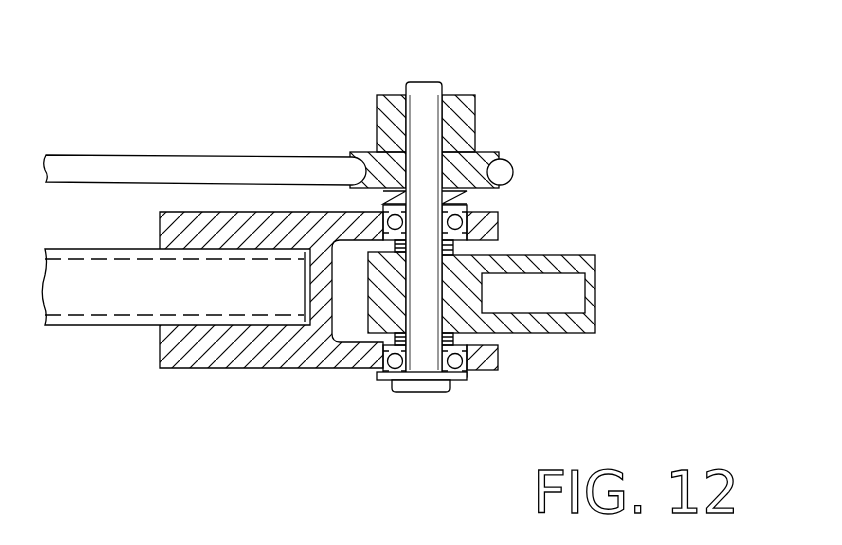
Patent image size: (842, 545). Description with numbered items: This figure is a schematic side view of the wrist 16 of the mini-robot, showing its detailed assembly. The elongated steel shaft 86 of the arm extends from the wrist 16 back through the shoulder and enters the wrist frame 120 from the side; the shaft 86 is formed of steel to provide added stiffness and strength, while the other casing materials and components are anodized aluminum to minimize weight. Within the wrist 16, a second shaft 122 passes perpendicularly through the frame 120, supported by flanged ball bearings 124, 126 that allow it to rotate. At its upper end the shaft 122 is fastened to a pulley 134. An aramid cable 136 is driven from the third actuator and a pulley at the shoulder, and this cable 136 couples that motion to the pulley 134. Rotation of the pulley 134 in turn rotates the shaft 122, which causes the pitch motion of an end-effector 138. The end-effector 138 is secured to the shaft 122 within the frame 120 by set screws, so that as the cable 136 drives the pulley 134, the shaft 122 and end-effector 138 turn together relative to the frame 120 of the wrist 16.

The wrist 16 is at (505, 68).
The shaft 86 is at (106, 249).
The frame 120 is at (287, 368).
The shaft 122 is at (407, 84).
The flanged ball bearing 124 is at (462, 378).
The flanged ball bearing 126 is at (475, 207).
The pulley 134 is at (478, 127).
The aramid cable 136 is at (178, 156).
The end-effector 138 is at (568, 254).